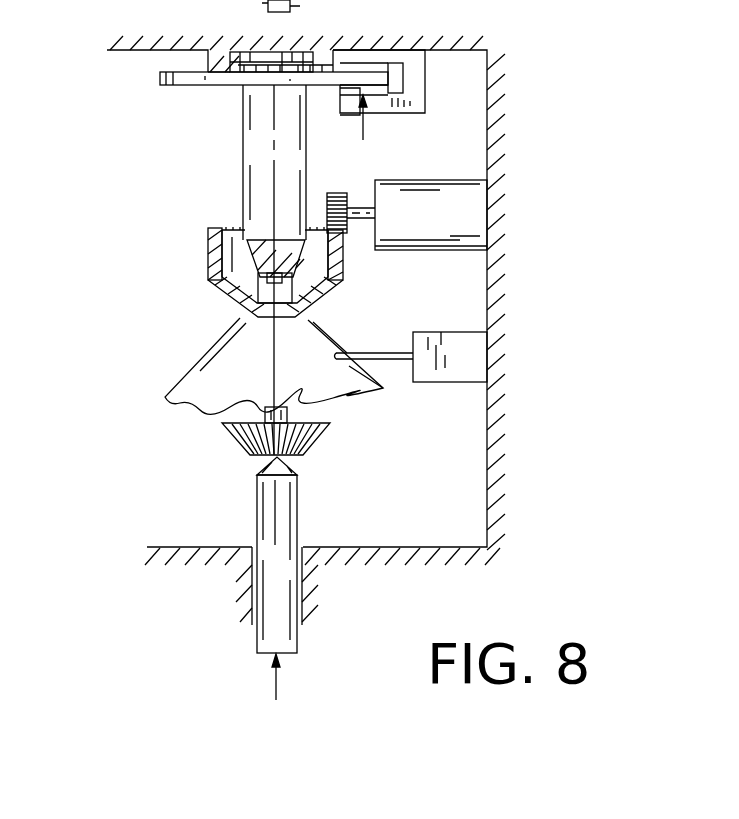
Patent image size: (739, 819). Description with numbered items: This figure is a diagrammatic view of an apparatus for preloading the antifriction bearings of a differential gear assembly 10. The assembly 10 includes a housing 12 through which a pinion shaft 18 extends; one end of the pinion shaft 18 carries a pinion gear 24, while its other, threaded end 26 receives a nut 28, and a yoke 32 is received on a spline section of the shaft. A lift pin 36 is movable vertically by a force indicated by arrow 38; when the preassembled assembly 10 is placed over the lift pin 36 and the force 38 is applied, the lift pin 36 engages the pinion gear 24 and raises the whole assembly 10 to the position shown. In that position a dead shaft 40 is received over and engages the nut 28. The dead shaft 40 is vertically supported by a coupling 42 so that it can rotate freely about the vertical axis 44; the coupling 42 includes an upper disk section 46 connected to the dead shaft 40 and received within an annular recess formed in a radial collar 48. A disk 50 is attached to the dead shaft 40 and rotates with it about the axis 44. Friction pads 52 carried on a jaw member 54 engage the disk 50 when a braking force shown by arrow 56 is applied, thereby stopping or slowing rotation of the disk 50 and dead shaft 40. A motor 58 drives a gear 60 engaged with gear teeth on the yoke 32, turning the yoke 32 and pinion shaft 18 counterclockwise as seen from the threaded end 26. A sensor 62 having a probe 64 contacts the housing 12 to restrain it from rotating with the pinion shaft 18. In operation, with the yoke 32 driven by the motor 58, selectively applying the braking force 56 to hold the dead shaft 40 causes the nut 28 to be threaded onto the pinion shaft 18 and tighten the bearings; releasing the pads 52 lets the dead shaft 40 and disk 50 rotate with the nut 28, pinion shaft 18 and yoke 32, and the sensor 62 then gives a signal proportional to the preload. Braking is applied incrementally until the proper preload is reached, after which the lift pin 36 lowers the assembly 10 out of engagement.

The differential gear assembly 10 is at (200, 342).
The housing 12 is at (196, 368).
The pinion shaft 18 is at (265, 415).
The pinion gear 24 is at (238, 438).
The threaded end 26 is at (208, 283).
The nut 28 is at (229, 295).
The yoke 32 is at (343, 290).
The lift pin 36 is at (257, 497).
The lift force arrow 38 is at (276, 680).
The dead shaft 40 is at (244, 164).
The coupling 42 is at (198, 60).
The vertical axis 44 is at (273, 118).
The upper disk section 46 is at (303, 55).
The radial collar 48 is at (216, 67).
The disk 50 is at (160, 79).
The friction pads 52 is at (378, 58).
The jaw member 54 is at (415, 78).
The braking force arrow 56 is at (367, 128).
The motor 58 is at (462, 196).
The gear 60 is at (347, 230).
The sensor 62 is at (460, 352).
The probe 64 is at (353, 358).